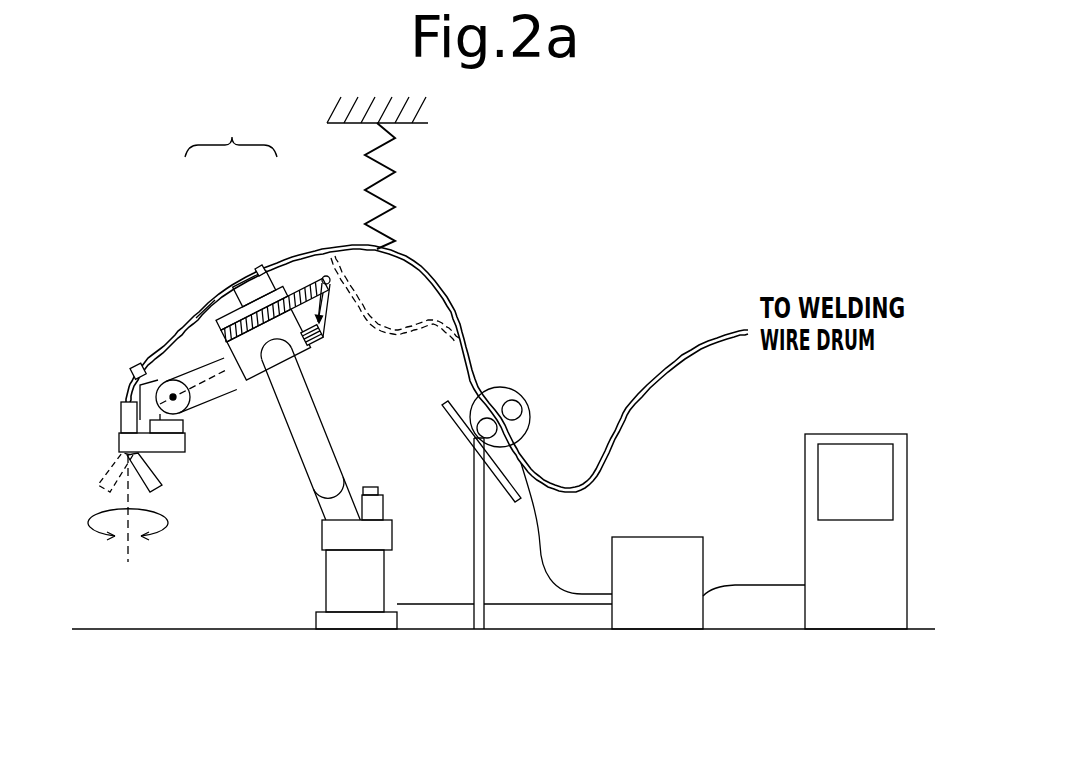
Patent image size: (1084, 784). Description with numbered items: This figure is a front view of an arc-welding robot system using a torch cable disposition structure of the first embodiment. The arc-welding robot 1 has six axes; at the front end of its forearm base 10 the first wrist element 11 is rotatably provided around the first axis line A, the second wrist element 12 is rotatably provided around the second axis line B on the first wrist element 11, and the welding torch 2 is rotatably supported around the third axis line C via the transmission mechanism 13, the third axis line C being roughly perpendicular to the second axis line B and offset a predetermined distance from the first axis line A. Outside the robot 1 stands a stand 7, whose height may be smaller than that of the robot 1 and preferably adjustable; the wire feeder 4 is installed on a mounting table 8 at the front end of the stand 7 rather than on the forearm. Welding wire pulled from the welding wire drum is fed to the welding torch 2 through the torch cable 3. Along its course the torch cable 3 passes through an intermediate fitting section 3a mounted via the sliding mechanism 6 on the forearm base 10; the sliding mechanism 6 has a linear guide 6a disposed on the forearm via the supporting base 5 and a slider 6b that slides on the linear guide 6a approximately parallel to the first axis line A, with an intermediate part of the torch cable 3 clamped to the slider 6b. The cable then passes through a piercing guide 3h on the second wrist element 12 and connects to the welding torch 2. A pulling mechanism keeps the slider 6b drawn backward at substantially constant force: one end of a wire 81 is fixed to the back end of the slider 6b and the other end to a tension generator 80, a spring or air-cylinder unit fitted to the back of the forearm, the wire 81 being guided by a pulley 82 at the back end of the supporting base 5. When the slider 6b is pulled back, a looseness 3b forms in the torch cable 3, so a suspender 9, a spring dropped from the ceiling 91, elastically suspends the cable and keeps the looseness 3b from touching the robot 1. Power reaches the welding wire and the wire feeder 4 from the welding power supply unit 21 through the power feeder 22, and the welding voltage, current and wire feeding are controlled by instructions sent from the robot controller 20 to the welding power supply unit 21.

The arc-welding robot 1 is at (288, 447).
The welding torch 2 is at (121, 415).
The torch cable 3 is at (160, 348).
The intermediate fitting section 3a is at (240, 272).
The looseness 3b is at (400, 340).
The piercing guide 3h is at (132, 366).
The wire feeder 4 is at (520, 392).
The supporting base 5 is at (203, 302).
The sliding mechanism 6 is at (236, 215).
The linear guide 6a is at (220, 297).
The slider 6b is at (262, 288).
The stand 7 is at (472, 535).
The mounting table 8 is at (457, 437).
The suspender 9 is at (392, 190).
The ceiling 91 is at (413, 125).
The forearm base 10 is at (300, 357).
The first wrist element 11 is at (203, 403).
The second wrist element 12 is at (160, 445).
The transmission mechanism 13 is at (160, 447).
The robot controller 20 is at (870, 460).
The welding power supply unit 21 is at (680, 552).
The power feeder 22 is at (545, 537).
The tension generator 80 is at (320, 343).
The wire 81 is at (293, 272).
The pulley 82 is at (335, 274).
The first axis line A is at (228, 369).
The second axis line B is at (178, 404).
The third axis line C is at (128, 522).